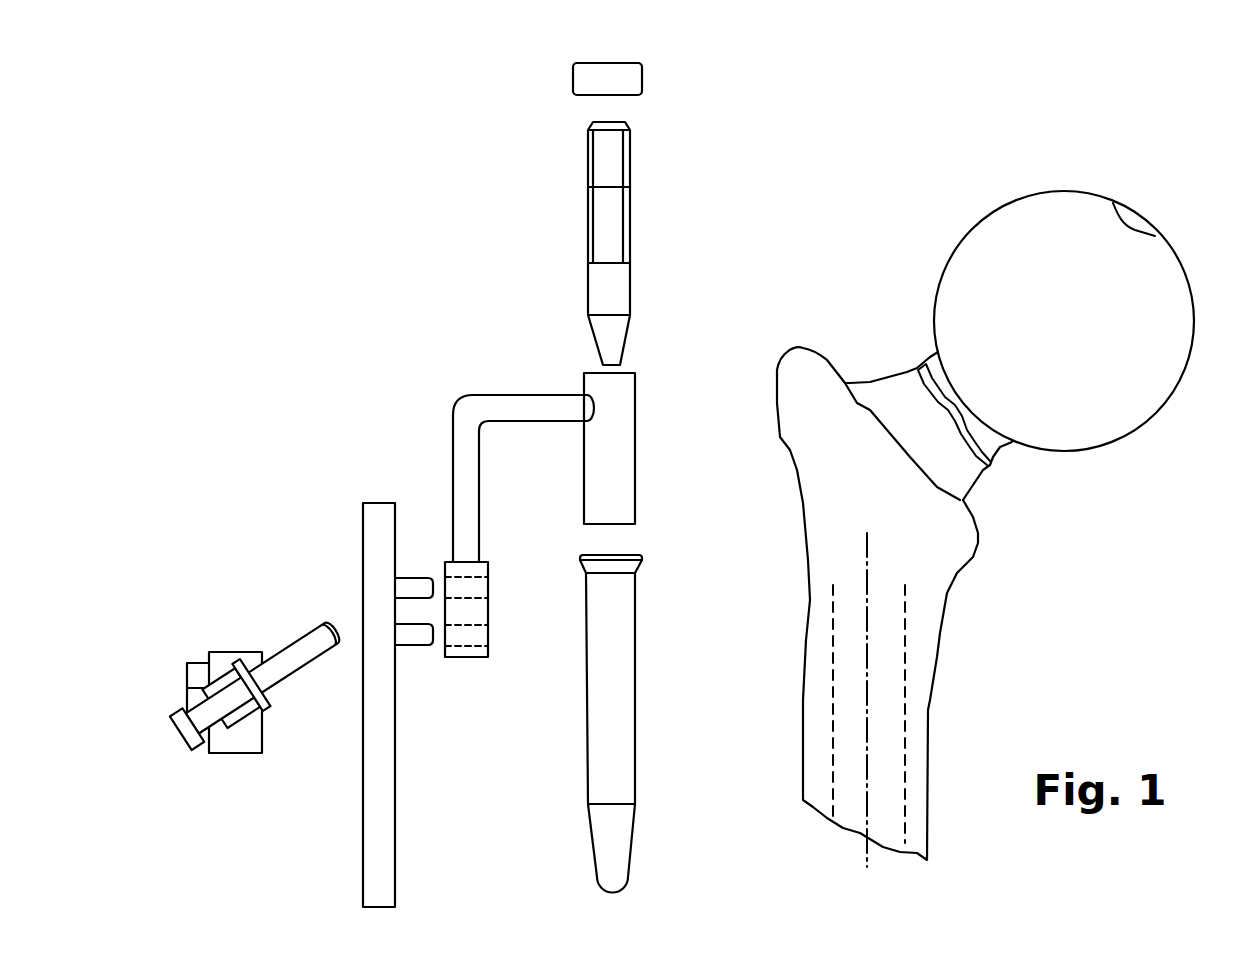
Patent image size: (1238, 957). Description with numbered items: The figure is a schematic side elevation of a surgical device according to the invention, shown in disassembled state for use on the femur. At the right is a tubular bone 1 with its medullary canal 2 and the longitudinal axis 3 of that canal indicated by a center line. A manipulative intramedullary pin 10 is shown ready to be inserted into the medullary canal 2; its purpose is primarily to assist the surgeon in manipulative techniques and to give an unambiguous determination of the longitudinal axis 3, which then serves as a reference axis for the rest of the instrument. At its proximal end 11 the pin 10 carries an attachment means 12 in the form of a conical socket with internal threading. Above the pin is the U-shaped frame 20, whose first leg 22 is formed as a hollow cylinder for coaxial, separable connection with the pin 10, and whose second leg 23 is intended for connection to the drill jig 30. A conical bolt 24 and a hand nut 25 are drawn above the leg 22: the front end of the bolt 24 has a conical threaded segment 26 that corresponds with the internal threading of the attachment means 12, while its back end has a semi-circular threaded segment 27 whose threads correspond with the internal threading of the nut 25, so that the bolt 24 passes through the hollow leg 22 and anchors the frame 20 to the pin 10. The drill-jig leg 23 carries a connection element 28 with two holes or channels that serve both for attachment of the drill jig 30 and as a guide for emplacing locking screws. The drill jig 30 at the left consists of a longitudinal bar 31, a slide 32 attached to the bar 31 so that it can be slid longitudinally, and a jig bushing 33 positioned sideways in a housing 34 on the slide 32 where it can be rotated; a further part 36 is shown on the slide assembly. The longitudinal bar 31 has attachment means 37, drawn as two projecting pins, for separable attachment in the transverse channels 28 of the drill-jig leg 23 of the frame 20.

The tubular bone 1 is at (1010, 659).
The medullary canal 2 is at (883, 763).
The longitudinal axis 3 is at (867, 730).
The manipulative intramedullary pin 10 is at (640, 707).
The proximal end 11 is at (618, 567).
The attachment means 12 is at (620, 555).
The U-shaped frame 20 is at (528, 345).
The medullary pin end or leg 22 is at (608, 443).
The drill-jig end or leg 23 is at (503, 613).
The conical bolt 24 is at (610, 222).
The hand nut 25 is at (622, 75).
The conical threaded segment 26 is at (612, 333).
The semi-circular threaded segment 27 is at (613, 155).
The connection element 28 is at (470, 590).
The drill jig 30 is at (313, 600).
The longitudinal bar 31 is at (375, 525).
The slide 32 is at (230, 658).
The jig bushing 33 is at (259, 682).
The housing 34 is at (231, 698).
The jaw 36 is at (197, 678).
The attachment means 37 is at (415, 588).